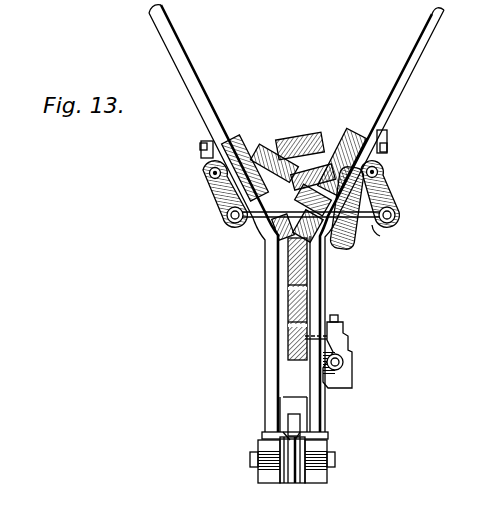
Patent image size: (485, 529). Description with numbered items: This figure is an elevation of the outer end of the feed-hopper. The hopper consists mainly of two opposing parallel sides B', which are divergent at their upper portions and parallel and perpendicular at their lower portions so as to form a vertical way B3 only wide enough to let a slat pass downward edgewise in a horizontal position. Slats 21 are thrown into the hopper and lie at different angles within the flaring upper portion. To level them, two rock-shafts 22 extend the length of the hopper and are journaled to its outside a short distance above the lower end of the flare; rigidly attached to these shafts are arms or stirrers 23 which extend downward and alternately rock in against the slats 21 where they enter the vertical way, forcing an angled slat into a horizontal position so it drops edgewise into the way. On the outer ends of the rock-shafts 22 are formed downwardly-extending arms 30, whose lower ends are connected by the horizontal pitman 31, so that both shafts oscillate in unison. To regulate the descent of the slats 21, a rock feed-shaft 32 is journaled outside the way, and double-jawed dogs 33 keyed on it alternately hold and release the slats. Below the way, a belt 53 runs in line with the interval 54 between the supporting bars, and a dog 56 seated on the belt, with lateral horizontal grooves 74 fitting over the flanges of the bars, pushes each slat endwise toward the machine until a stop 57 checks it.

The hopper sides B' is at (296, 218).
The vertical way B3 is at (285, 377).
The slats 21 is at (304, 203).
The rock-shafts 22 is at (210, 177).
The arms or stirrers 23 is at (270, 232).
The downwardly-extending arms 30 is at (220, 203).
The horizontal pitman 31 is at (374, 226).
The rock feed-shaft 32 is at (345, 366).
The double-jawed dogs 33 is at (350, 345).
The belt 53 is at (292, 482).
The interval 54 is at (324, 434).
The dog 56 is at (299, 422).
The stop 57 is at (332, 462).
The lateral horizontal grooves 74 is at (287, 433).